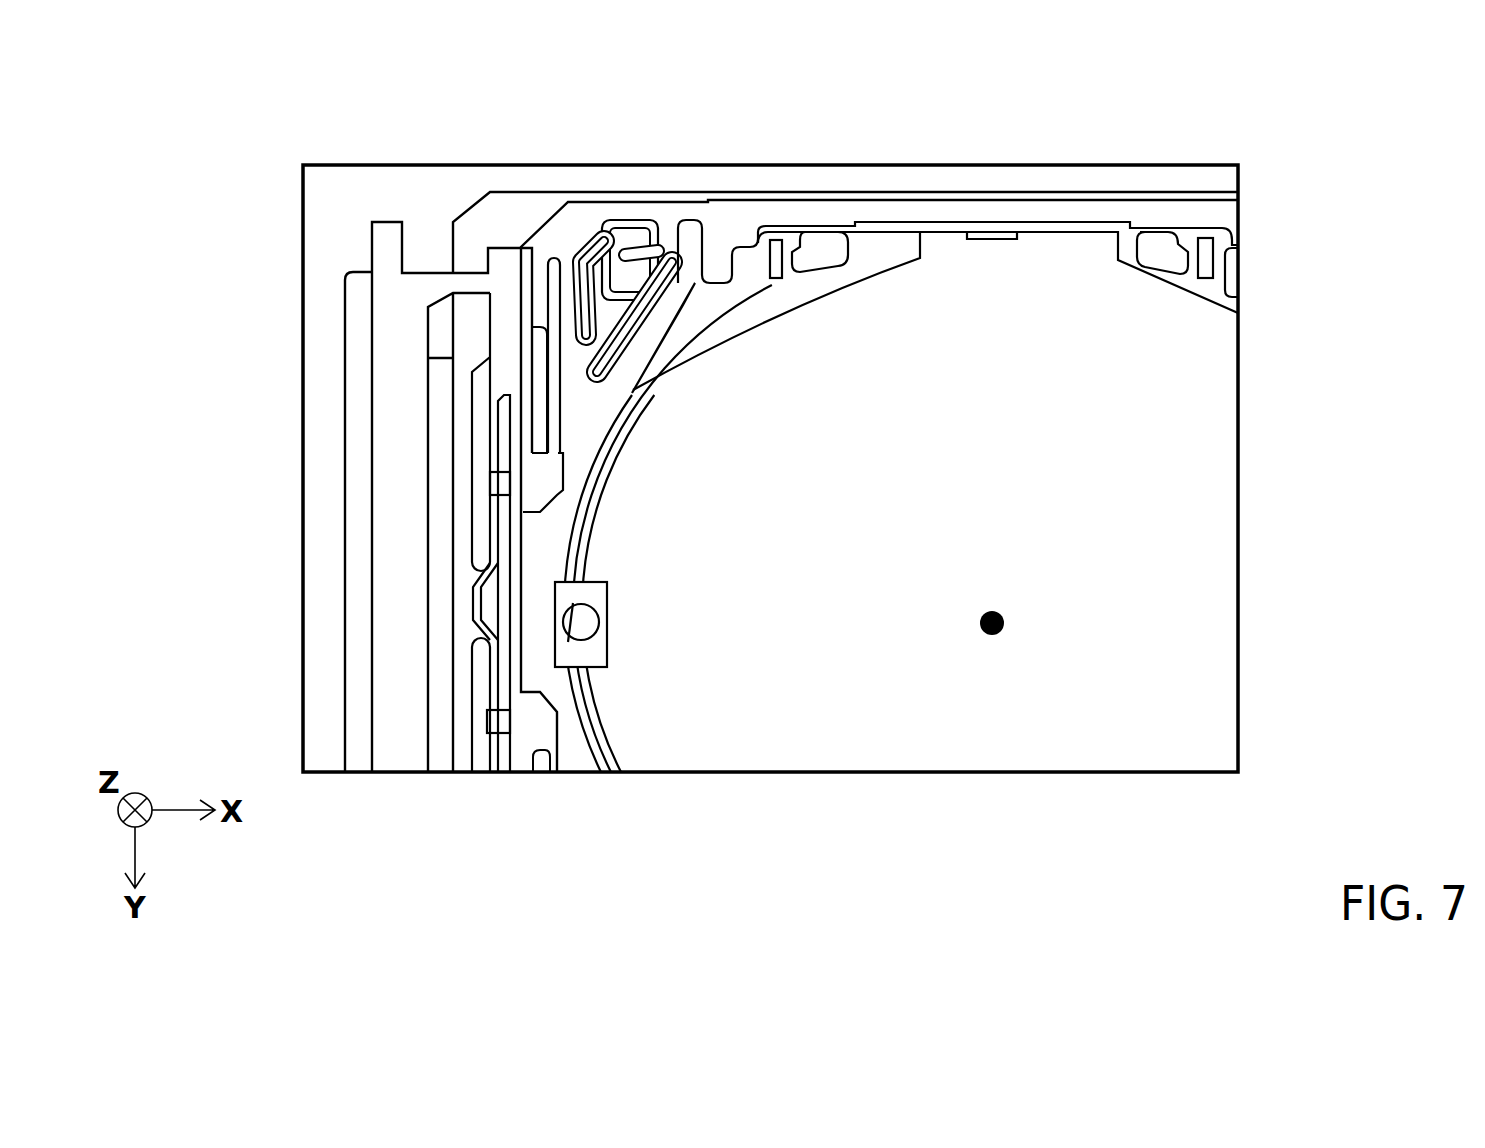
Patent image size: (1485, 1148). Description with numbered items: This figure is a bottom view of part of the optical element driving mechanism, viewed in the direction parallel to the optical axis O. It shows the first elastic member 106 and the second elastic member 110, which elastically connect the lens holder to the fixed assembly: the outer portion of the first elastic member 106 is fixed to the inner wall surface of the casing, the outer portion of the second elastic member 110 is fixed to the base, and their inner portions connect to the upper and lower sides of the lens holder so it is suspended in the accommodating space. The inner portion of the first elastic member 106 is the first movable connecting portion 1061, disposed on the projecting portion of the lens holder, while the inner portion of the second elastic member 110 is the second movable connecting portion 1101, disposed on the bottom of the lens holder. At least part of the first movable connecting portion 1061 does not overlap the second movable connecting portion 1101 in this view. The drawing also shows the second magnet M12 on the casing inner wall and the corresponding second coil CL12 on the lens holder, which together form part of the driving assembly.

The first elastic member 106 is at (514, 220).
The second elastic member 110 is at (387, 253).
The second movable connecting portion 1101 is at (668, 240).
The first movable connecting portion 1061 is at (798, 240).
The second magnet M12 is at (363, 385).
The second coil CL12 is at (440, 507).
The optical axis O is at (1002, 636).